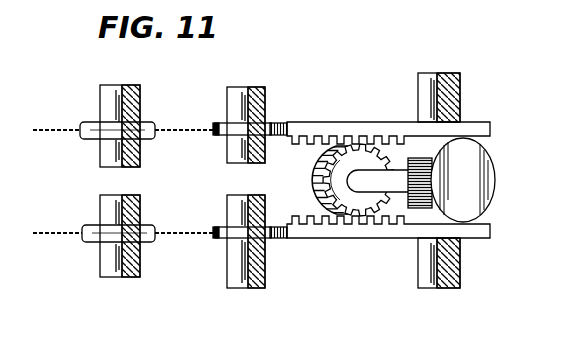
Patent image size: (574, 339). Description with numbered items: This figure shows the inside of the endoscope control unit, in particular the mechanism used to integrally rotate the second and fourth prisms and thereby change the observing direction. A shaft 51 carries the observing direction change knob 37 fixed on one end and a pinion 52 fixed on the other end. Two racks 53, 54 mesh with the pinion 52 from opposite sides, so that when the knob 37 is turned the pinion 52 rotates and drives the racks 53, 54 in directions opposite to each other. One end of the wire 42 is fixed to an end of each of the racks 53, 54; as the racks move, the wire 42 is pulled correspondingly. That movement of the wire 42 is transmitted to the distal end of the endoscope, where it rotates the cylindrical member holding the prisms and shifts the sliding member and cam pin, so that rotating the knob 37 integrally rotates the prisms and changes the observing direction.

The wire 42 is at (181, 124).
The rack 53 is at (312, 125).
The rack 54 is at (307, 239).
The pinion 52 is at (311, 179).
The shaft 51 is at (396, 193).
The observing direction change knob 37 is at (493, 178).